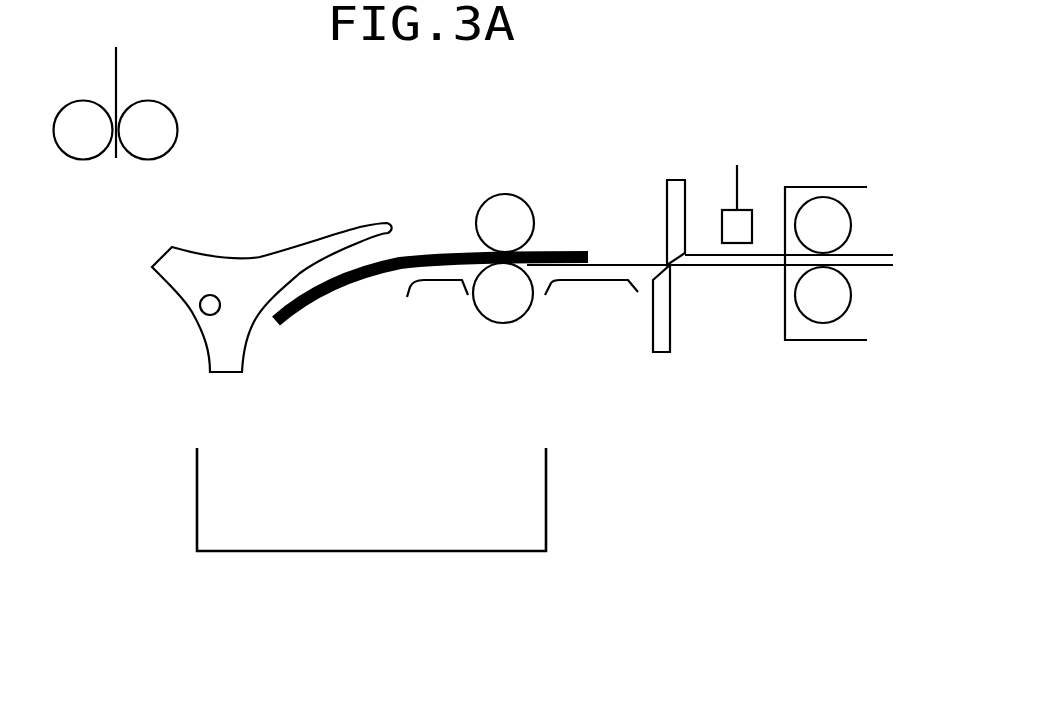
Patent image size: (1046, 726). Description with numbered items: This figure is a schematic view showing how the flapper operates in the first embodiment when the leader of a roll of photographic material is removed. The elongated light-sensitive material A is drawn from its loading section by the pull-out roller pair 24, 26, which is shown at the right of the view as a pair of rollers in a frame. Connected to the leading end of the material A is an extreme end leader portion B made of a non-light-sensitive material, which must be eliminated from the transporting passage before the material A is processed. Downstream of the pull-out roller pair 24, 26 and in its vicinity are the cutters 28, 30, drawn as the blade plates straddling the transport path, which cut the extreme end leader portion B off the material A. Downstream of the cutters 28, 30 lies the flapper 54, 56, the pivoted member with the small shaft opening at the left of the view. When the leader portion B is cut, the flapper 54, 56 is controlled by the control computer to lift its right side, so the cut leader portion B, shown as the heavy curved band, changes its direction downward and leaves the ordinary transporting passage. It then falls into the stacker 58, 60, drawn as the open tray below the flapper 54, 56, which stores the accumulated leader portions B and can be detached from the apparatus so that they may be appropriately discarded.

The pull-out roller pair 24 is at (835, 219).
The pull-out roller pair 26 is at (822, 220).
The cutter 28 is at (658, 221).
The cutter 30 is at (675, 192).
The flapper 54 is at (272, 251).
The flapper 56 is at (238, 278).
The stacker 58 is at (466, 499).
The stacker 60 is at (546, 490).
The light-sensitive material A is at (713, 260).
The extreme end leader portion B is at (362, 283).